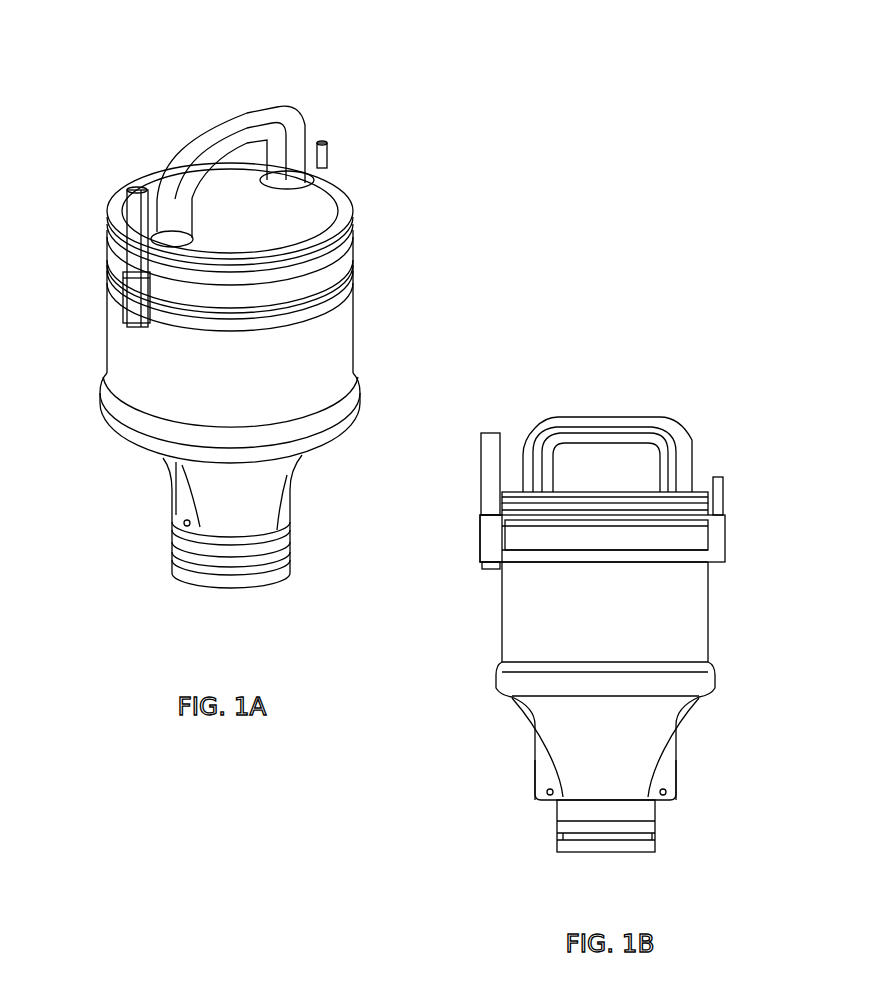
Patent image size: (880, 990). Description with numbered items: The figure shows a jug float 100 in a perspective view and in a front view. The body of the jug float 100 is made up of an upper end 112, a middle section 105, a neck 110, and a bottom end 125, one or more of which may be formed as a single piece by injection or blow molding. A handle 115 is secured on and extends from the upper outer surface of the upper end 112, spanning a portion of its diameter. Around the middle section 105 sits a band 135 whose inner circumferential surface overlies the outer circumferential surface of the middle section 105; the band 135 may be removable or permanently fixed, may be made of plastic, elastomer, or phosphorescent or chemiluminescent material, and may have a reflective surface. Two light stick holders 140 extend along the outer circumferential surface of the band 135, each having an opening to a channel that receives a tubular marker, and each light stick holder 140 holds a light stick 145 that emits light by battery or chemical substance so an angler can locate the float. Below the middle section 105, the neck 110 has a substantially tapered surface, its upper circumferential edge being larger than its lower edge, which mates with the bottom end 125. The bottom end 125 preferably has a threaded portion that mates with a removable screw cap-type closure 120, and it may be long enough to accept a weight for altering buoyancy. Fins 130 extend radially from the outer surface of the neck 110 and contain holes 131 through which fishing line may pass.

In FIG. 1A, the jug float 100 is at (385, 212).
In FIG. 1B, the jug float 100 is at (668, 305).
In FIG. 1A, the middle section 105 is at (87, 210).
In FIG. 1B, the middle section 105 is at (760, 697).
In FIG. 1A, the neck 110 is at (253, 490).
In FIG. 1B, the neck 110 is at (573, 732).
In FIG. 1A, the upper end 112 is at (323, 212).
In FIG. 1B, the upper end 112 is at (698, 493).
In FIG. 1A, the handle 115 is at (227, 133).
In FIG. 1B, the handle 115 is at (620, 417).
In FIG. 1A, the closure 120 is at (256, 586).
In FIG. 1B, the closure 120 is at (606, 826).
In FIG. 1A, the bottom end 125 is at (290, 522).
In FIG. 1A, the fin 130 is at (174, 514).
In FIG. 1B, the fin 130 is at (542, 779).
In FIG. 1A, the hole 131 is at (191, 525).
In FIG. 1B, the hole 131 is at (667, 796).
In FIG. 1A, the band 135 is at (337, 275).
In FIG. 1B, the band 135 is at (683, 527).
In FIG. 1A, the light stick holder 140 is at (135, 288).
In FIG. 1B, the light stick holder 140 is at (481, 548).
In FIG. 1A, the light stick 145 is at (324, 165).
In FIG. 1B, the light stick 145 is at (497, 447).